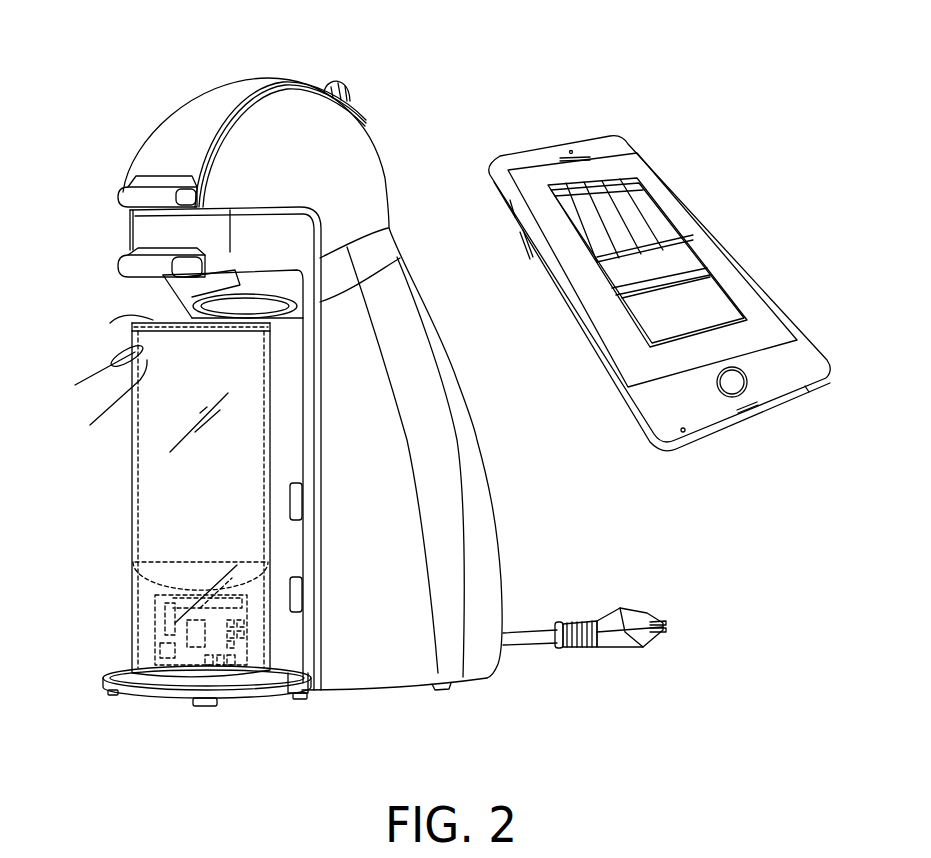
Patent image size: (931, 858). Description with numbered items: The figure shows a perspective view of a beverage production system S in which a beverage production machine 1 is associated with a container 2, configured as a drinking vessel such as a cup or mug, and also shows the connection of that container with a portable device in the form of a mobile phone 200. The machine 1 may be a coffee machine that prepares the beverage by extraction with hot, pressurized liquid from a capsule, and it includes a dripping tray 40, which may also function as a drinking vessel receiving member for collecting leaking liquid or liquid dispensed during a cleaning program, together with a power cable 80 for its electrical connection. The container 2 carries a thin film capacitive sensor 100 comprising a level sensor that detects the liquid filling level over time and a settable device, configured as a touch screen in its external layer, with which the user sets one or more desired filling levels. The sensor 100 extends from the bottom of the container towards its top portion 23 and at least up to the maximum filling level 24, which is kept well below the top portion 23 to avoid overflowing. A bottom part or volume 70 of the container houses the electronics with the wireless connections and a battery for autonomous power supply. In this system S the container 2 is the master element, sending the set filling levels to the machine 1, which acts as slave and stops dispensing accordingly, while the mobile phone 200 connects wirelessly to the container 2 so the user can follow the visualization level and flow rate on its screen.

The beverage production system S is at (143, 80).
The beverage production machine 1 is at (352, 143).
The mobile phone 200 is at (687, 263).
The top portion 23 is at (132, 327).
The maximum filling level 24 is at (193, 362).
The thin film capacitive sensor 100 is at (172, 478).
The container 2 is at (135, 570).
The bottom part or volume 70 is at (140, 638).
The dripping tray 40 is at (243, 700).
The power cable 80 is at (543, 638).